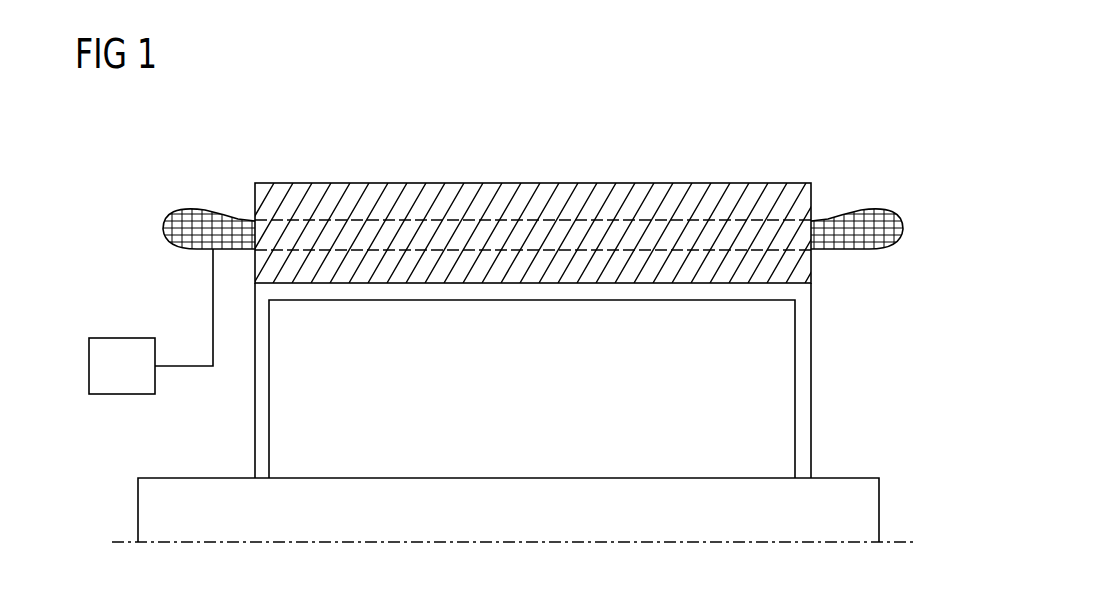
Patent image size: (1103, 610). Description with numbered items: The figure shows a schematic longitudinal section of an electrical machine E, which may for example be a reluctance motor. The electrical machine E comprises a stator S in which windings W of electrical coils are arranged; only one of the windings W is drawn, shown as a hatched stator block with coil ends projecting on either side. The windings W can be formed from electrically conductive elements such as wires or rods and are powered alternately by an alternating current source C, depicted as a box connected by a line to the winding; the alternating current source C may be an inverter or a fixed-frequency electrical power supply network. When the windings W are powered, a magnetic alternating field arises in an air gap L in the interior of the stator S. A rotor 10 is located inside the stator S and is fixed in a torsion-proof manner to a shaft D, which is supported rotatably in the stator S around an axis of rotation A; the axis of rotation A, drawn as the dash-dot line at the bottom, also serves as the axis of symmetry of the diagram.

The electrical machine E is at (533, 292).
The stator S is at (683, 195).
The windings W is at (639, 220).
The air gap L is at (783, 291).
The rotor 10 is at (783, 341).
The shaft D is at (851, 478).
The axis of rotation A is at (899, 542).
The alternating current source C is at (123, 338).